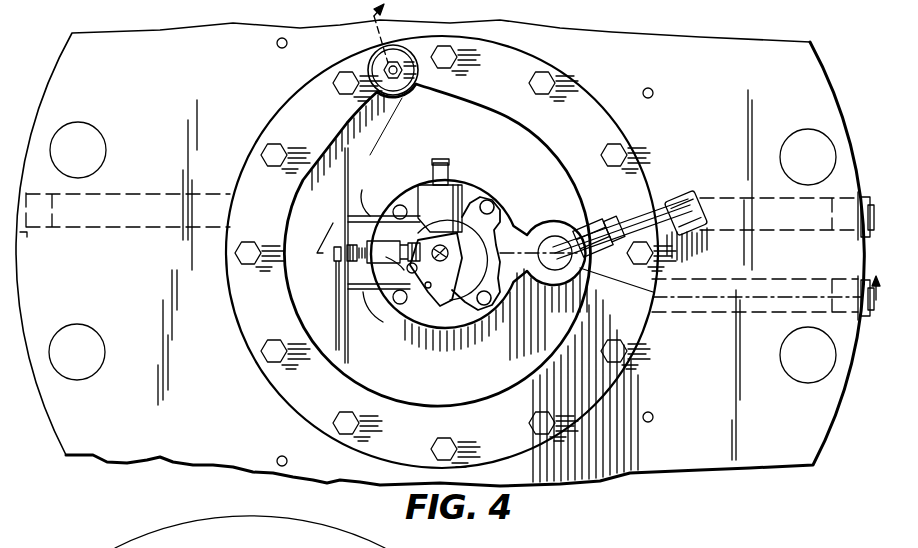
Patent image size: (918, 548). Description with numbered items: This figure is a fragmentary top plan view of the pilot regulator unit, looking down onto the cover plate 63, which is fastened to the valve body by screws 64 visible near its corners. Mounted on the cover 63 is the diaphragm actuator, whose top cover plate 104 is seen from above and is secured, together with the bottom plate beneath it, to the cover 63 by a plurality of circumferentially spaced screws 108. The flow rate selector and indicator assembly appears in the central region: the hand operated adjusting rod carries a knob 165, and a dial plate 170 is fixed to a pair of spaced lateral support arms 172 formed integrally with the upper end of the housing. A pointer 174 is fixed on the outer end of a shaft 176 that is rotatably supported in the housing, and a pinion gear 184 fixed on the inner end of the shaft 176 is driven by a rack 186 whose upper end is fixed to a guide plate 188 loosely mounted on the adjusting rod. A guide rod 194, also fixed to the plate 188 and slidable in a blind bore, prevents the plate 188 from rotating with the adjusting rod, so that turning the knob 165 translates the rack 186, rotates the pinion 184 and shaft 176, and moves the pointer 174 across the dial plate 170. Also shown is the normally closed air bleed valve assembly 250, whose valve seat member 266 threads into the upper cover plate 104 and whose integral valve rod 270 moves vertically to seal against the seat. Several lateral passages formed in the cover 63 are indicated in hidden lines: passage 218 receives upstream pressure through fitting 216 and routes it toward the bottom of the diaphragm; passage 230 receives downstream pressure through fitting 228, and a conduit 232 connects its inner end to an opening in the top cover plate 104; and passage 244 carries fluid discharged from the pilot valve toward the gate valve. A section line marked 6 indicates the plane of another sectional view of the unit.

The cover plate 63 is at (748, 428).
The screws 64 is at (86, 127).
The top cover plate 104 is at (244, 215).
The screws 108 is at (348, 410).
The valve seat member 266 is at (368, 59).
The valve rod 270 is at (385, 65).
The air bleed valve assembly 250 is at (412, 97).
The section line 6- 6 is at (624, 160).
The lateral passage 244 is at (112, 192).
The lateral passage 218 is at (772, 312).
The lateral passage 230 is at (724, 208).
The fitting 228 is at (868, 200).
The fitting 216 is at (863, 318).
The knob 165 is at (478, 220).
The conduit 232 is at (647, 213).
The dial plate 170 is at (349, 168).
The pointer 174 is at (336, 300).
The shaft 176 is at (383, 300).
The lateral support arms 172 is at (372, 216).
The guide plate 188 is at (410, 333).
The rack 186 is at (407, 268).
The pinion gear 184 is at (418, 216).
The guide rod 194 is at (440, 298).